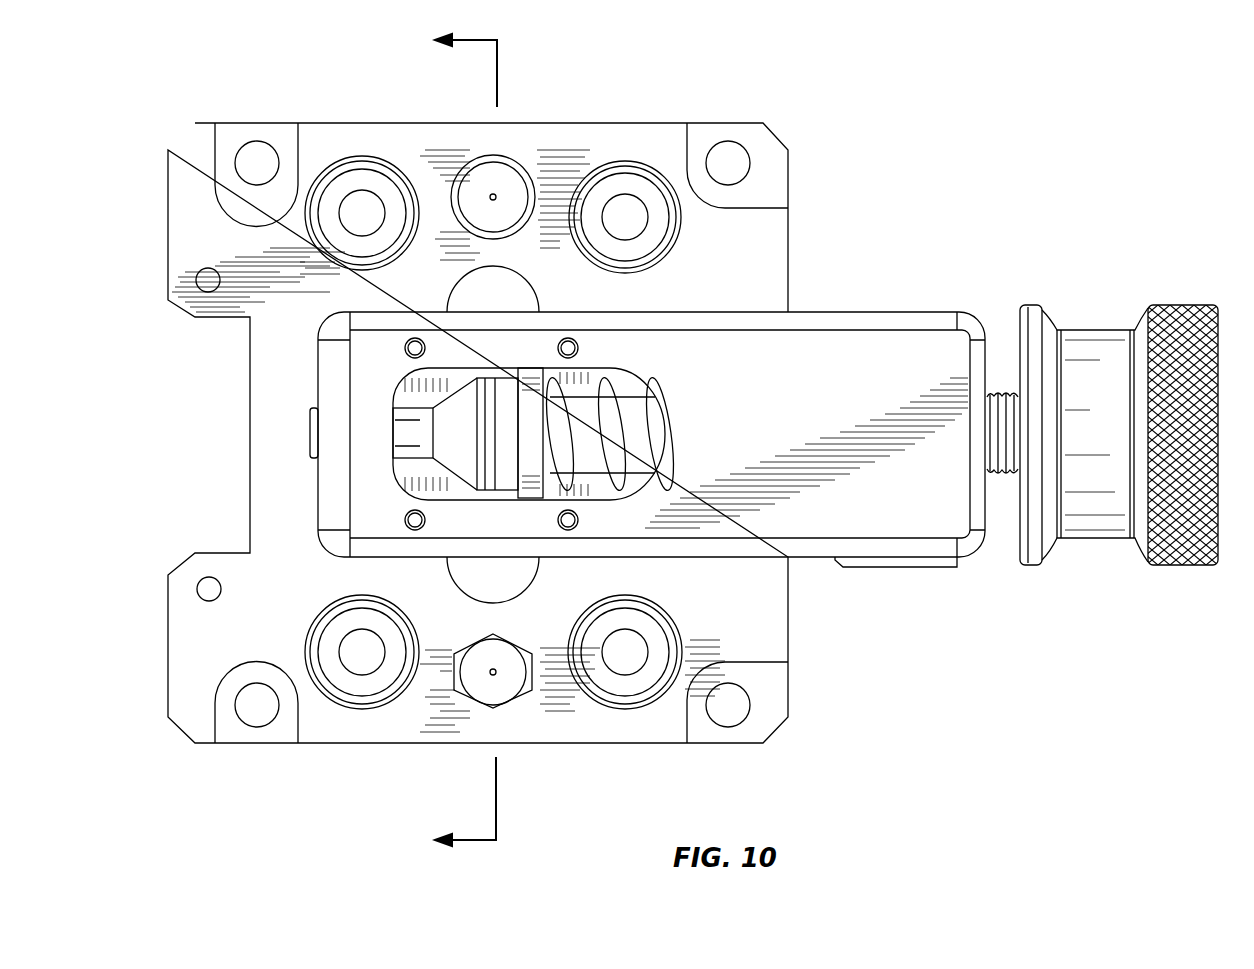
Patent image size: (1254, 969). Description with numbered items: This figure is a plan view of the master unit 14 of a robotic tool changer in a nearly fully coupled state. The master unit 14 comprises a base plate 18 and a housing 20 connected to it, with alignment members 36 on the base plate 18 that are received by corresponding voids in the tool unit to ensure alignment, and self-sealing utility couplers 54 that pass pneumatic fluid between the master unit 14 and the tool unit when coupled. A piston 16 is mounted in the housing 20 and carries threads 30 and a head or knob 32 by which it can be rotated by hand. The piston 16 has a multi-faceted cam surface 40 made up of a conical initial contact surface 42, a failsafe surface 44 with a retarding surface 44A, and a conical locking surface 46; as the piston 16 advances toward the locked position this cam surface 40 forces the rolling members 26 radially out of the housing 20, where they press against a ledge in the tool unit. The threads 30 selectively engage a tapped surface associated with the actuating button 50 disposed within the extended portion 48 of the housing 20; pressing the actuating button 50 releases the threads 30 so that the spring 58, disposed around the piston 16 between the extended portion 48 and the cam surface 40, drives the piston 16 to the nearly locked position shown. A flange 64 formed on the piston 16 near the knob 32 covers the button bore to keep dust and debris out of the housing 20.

The master unit 14 is at (703, 440).
The piston 16 is at (1129, 414).
The base plate 18 is at (758, 628).
The housing 20 is at (783, 357).
The rolling members 26 is at (493, 434).
The threaded shaft 30 is at (998, 392).
The head 32 is at (1178, 312).
The alignment members 36 is at (493, 155).
The multi-faceted cam surface 40 is at (420, 442).
The initial contact surface 42 is at (458, 388).
The failsafe surface 44 is at (487, 497).
The retarding surface 44A is at (477, 382).
The locking surface 46 is at (503, 372).
The extended portion of the housing 48 is at (717, 414).
The actuating button 50 is at (917, 567).
The utility couplers 54 is at (362, 172).
The spring 58 is at (615, 435).
The flange 64 is at (1030, 566).